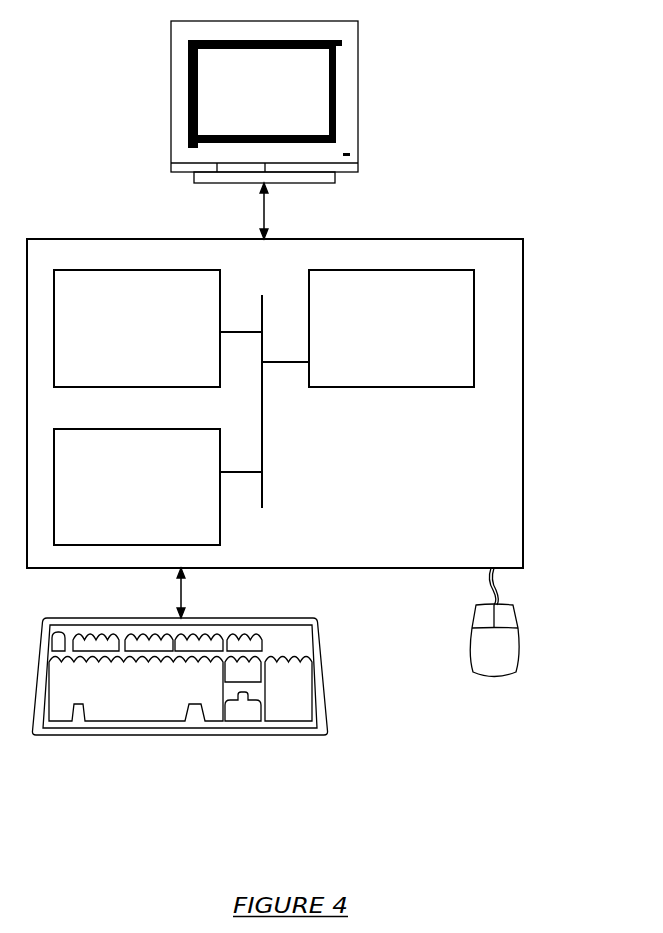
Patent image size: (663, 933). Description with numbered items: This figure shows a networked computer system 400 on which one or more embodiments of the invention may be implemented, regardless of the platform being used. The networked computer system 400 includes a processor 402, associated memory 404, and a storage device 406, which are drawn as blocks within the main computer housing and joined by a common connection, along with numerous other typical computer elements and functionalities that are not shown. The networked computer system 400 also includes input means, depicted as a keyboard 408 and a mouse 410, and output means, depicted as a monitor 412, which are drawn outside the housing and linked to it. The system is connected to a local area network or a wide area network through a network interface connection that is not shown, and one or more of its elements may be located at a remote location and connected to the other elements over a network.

The networked computer system 400 is at (533, 138).
The processor 402 is at (375, 337).
The memory 404 is at (118, 339).
The storage device 406 is at (118, 496).
The keyboard 408 is at (116, 700).
The mouse 410 is at (477, 658).
The monitor 412 is at (247, 106).